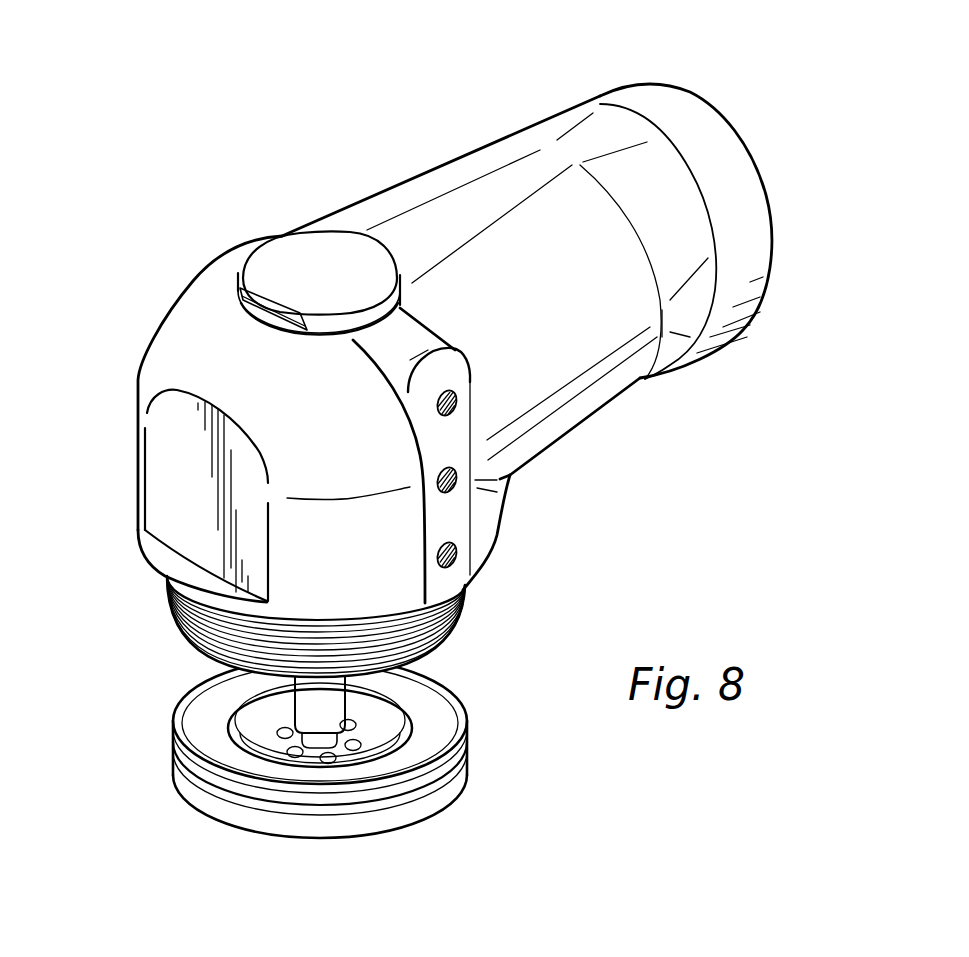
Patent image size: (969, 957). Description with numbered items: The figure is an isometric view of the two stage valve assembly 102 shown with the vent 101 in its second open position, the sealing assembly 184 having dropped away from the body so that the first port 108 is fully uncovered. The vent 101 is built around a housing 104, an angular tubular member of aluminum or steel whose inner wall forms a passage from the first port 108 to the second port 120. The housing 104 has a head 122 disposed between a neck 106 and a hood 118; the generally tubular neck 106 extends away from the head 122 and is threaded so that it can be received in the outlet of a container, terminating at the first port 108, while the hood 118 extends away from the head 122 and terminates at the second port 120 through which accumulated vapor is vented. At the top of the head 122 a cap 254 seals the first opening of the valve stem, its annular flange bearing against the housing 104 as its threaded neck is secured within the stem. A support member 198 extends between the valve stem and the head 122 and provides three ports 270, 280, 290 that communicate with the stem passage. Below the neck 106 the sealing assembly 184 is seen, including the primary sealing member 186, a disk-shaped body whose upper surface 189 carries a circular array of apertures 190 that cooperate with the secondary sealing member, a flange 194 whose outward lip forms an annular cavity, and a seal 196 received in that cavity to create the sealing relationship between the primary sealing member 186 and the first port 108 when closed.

The vent 101 is at (151, 192).
The valve assembly 102 is at (523, 762).
The housing 104 is at (393, 182).
The neck 106 is at (445, 624).
The first port 108 is at (193, 645).
The hood 118 is at (537, 143).
The second port 120 is at (702, 100).
The head 122 is at (178, 328).
The sealing assembly 184 is at (152, 822).
The primary sealing member 186 is at (438, 800).
The upper surface 189 is at (380, 732).
The apertures 190 is at (293, 753).
The flange 194 is at (193, 713).
The seal 196 is at (400, 790).
The support member 198 is at (457, 348).
The cap 254 is at (305, 262).
The port 270 is at (455, 404).
The port 280 is at (453, 488).
The port 290 is at (455, 556).